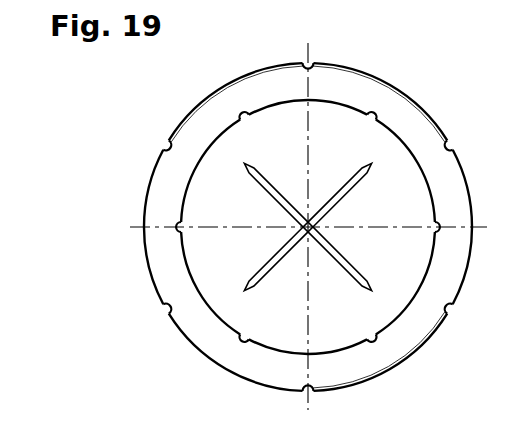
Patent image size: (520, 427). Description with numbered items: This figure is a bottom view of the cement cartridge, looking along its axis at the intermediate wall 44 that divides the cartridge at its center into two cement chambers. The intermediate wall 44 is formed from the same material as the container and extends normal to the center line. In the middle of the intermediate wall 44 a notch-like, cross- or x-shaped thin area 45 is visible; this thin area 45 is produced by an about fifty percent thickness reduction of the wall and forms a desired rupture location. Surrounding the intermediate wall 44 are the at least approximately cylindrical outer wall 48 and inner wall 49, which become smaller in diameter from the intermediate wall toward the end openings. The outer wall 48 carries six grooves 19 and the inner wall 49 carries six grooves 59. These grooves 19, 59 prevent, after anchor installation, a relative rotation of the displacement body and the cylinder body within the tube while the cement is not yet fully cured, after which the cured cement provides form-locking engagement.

The grooves 19 is at (174, 143).
The grooves 59 is at (177, 225).
The intermediate wall 44 is at (205, 238).
The outer wall 48 is at (153, 274).
The thin area 45 is at (266, 265).
The inner wall 49 is at (208, 312).